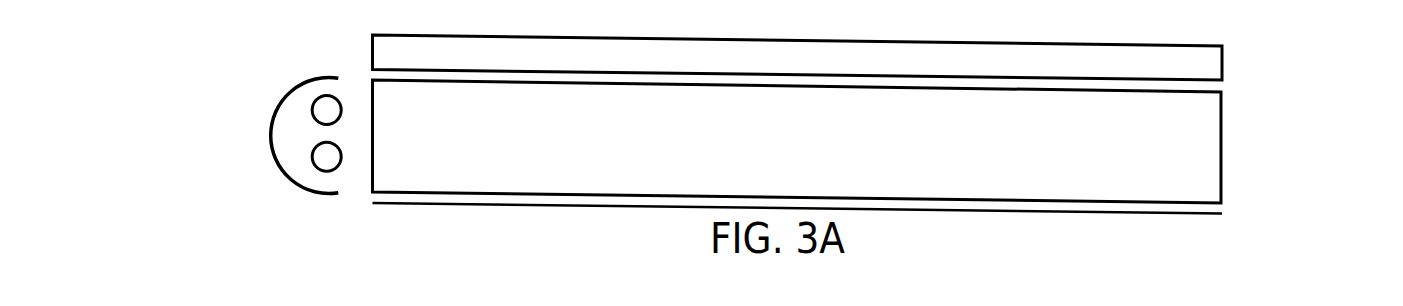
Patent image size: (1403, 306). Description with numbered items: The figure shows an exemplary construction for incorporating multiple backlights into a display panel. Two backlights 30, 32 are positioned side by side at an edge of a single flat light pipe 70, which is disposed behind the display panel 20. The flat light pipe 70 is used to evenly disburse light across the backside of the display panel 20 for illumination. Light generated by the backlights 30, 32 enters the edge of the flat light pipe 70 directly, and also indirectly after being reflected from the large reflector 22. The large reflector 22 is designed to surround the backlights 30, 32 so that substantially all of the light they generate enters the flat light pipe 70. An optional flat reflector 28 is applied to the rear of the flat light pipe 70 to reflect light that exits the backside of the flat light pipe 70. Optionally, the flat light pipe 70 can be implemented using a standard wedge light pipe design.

The display panel 20 is at (1207, 60).
The flat light pipe 70 is at (1212, 148).
The flat reflector 28 is at (1172, 217).
The large reflector 22 is at (270, 128).
The backlight 30 is at (323, 108).
The backlight 32 is at (323, 158).